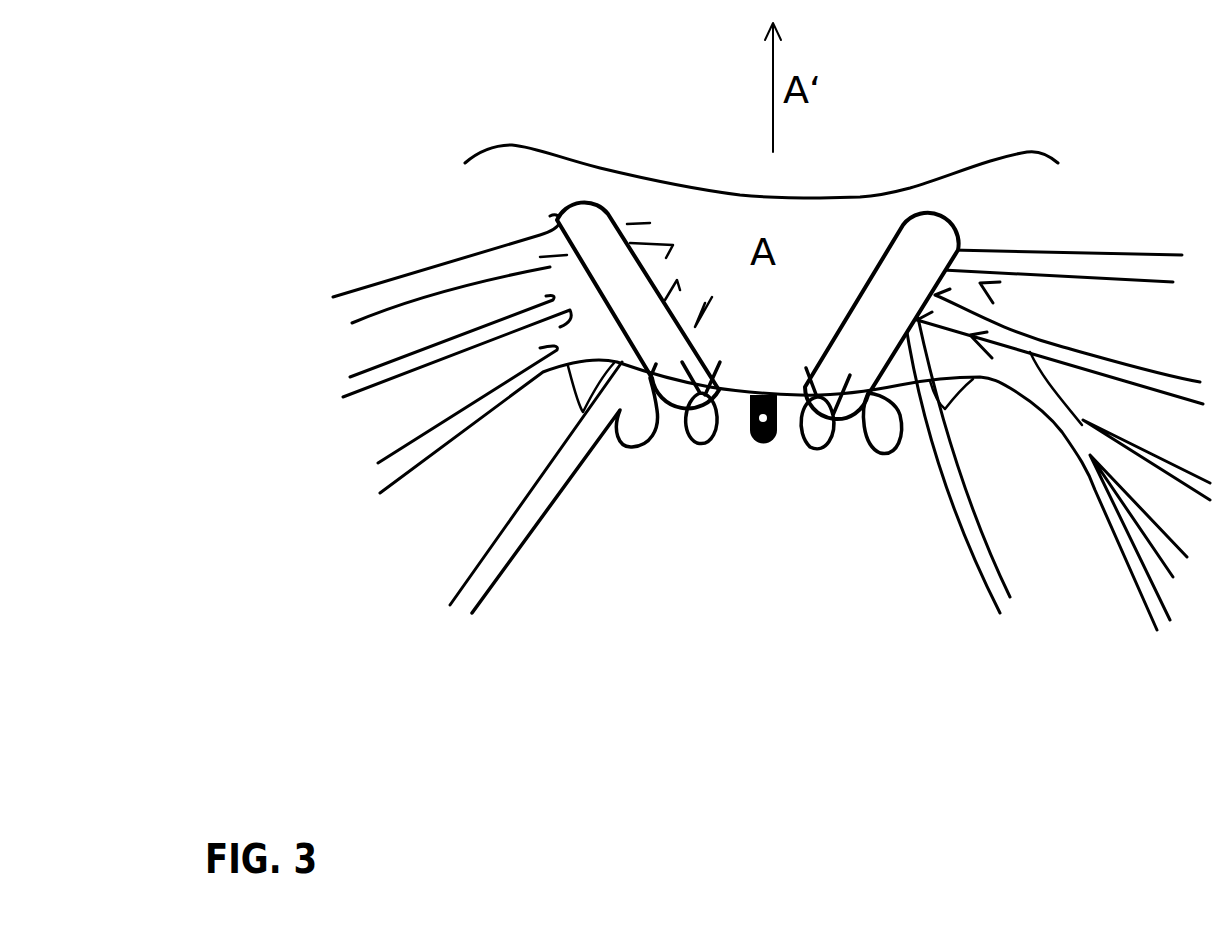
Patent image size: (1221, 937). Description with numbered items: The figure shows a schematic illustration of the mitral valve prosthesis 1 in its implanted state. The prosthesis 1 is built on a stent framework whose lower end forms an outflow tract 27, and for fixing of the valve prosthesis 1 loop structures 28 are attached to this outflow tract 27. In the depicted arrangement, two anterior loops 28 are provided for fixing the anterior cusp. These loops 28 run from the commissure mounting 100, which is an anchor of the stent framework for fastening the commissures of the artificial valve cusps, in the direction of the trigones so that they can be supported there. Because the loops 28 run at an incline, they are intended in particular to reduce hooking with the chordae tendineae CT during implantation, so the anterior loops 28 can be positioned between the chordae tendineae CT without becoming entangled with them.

The mitral valve prosthesis 1 is at (854, 157).
The chordae tendineae CT is at (445, 266).
The outflow tract 27 is at (627, 443).
The anterior loops 28 is at (648, 287).
The anchor (commissure mounting) 100 is at (748, 443).